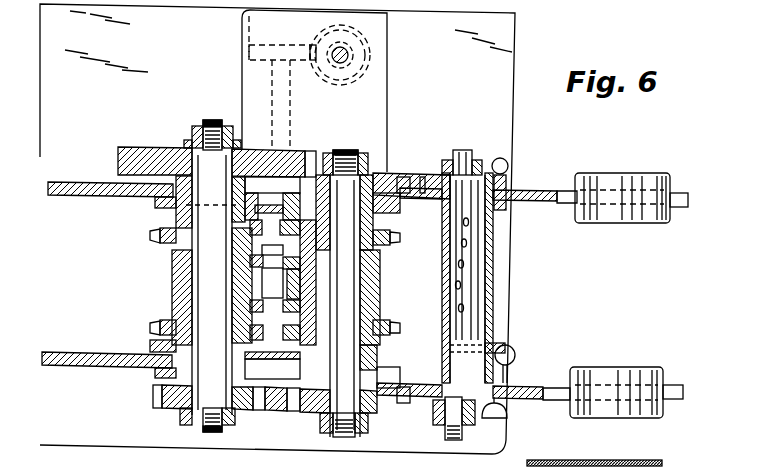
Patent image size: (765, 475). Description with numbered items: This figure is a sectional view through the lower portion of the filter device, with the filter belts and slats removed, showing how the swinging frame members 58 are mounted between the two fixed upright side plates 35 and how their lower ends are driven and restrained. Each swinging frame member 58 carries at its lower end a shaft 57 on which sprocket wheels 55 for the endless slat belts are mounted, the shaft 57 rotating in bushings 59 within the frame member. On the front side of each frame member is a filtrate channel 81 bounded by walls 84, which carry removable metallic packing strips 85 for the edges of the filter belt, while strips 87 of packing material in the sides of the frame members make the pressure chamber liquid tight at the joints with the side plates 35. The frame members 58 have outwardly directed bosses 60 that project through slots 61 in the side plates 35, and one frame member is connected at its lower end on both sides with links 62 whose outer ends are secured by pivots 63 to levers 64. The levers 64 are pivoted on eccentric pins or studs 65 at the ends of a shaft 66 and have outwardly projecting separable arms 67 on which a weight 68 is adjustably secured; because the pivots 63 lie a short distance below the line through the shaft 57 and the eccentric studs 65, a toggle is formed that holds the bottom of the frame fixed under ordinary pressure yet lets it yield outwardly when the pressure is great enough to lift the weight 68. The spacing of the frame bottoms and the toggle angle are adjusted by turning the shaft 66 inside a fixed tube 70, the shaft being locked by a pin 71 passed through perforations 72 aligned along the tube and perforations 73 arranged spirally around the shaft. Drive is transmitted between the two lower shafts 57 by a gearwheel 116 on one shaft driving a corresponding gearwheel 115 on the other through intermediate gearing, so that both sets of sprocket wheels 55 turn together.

The side plates 35 is at (63, 198).
The sprocket wheels 55 is at (162, 237).
The shaft 57 is at (198, 286).
The swinging frame member 58 is at (296, 282).
The bushings 59 is at (178, 267).
The bosses 60 is at (378, 172).
The slots 61 is at (404, 150).
The links 62 is at (413, 175).
The pivots 63 is at (422, 178).
The levers 64 is at (438, 173).
The eccentric pins or studs 65 is at (465, 150).
The shaft 66 is at (476, 297).
The arms 67 is at (565, 199).
The weight 68 is at (612, 185).
The tube 70 is at (492, 268).
The pin 71 is at (513, 356).
The perforations 72 is at (489, 333).
The perforations 73 is at (460, 300).
The filtrate channel 81 is at (292, 274).
The walls 84 is at (292, 352).
The metallic packing strips 85 is at (286, 195).
The strips of packing material 87 is at (260, 219).
The gearwheel 115 is at (290, 410).
The gearwheel 116 is at (152, 398).